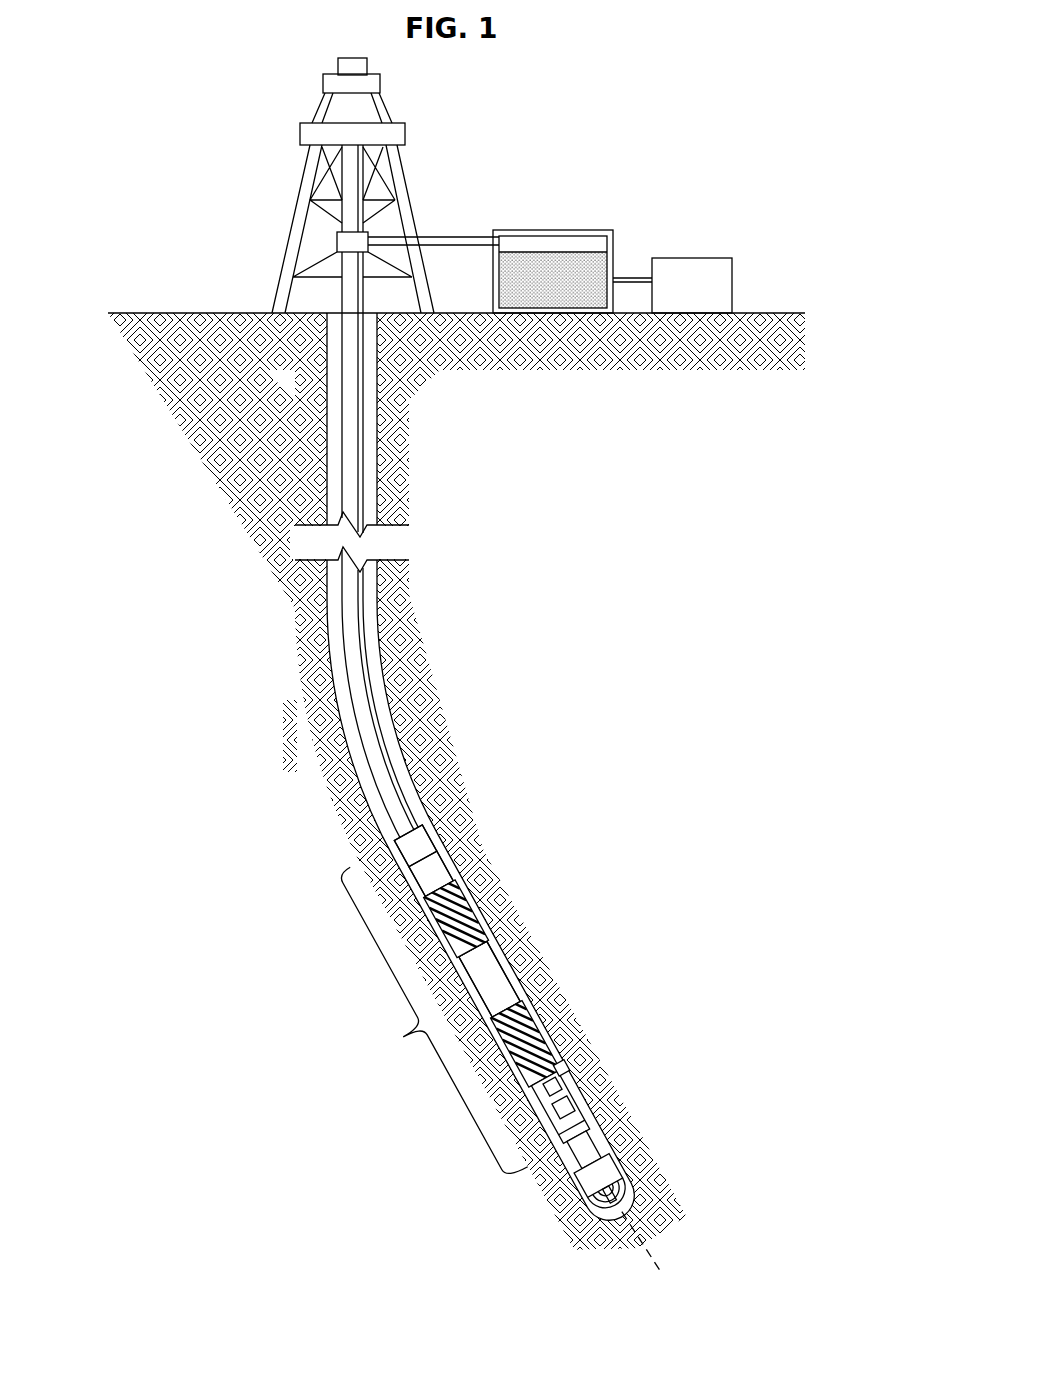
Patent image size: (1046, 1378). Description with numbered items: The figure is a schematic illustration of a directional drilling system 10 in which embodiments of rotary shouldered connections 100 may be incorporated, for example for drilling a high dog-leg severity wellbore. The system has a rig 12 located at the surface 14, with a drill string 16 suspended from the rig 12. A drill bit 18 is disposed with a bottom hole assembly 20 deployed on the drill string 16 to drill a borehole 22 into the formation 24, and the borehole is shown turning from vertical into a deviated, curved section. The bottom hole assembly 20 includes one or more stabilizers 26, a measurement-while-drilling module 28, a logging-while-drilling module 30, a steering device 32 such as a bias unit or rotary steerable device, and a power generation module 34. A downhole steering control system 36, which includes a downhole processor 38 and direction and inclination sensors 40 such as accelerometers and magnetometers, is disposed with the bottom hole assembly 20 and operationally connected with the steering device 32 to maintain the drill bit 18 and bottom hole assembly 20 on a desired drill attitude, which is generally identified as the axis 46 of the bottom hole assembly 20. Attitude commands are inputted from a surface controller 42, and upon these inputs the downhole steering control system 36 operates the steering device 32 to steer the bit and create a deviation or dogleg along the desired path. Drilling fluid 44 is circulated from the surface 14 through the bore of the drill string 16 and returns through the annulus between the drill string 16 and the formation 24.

The directional drilling system 10 is at (184, 145).
The rig 12 is at (290, 233).
The surface 14 is at (190, 312).
The drill string 16 is at (356, 614).
The drill bit 18 is at (627, 1168).
The bottom hole assembly 20 is at (403, 1037).
The borehole 22 is at (335, 484).
The formation 24 is at (328, 774).
The stabilizer 26 is at (480, 910).
The measurement-while-drilling module 28 is at (503, 983).
The logging-while-drilling module 30 is at (440, 863).
The steering device 32 is at (587, 1123).
The power generation module 34 is at (423, 840).
The downhole steering control system 36 is at (576, 1055).
The downhole processor 38 is at (580, 1065).
The direction and inclination sensors 40 is at (572, 1101).
The surface controller 42 is at (702, 298).
The drilling fluid 44 is at (565, 291).
The axis 46 is at (652, 1252).
The rotary shouldered connection 100 is at (410, 822).